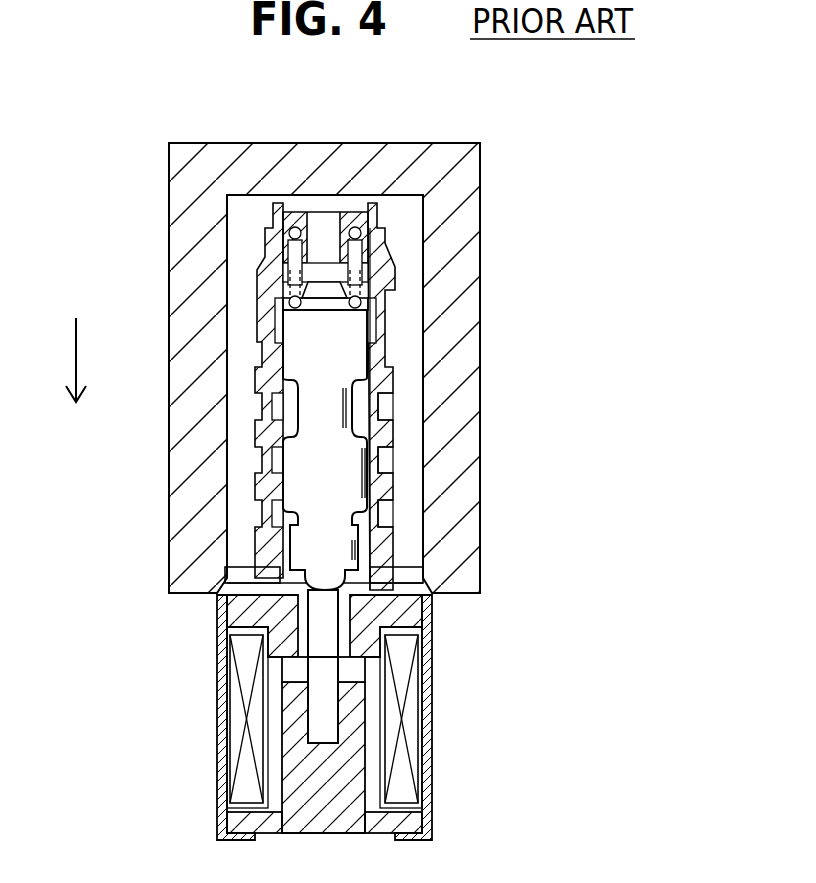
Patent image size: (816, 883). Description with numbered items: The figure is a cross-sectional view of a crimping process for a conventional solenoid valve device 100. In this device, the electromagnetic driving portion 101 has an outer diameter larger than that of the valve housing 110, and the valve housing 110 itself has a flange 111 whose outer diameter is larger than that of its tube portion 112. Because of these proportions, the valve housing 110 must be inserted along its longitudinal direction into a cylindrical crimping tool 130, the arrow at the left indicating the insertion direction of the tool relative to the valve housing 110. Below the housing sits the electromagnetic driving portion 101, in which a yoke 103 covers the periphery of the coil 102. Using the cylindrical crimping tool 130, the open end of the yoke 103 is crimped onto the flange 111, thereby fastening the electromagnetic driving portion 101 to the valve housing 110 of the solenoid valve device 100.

The cylindrical crimping tool 130 is at (481, 199).
The tube portion 112 is at (390, 345).
The valve housing 110 is at (395, 432).
The flange 111 is at (442, 557).
The electromagnetic driving portion 101 is at (442, 668).
The solenoid valve device 100 is at (442, 748).
The coil 102 is at (216, 680).
The yoke 103 is at (218, 750).